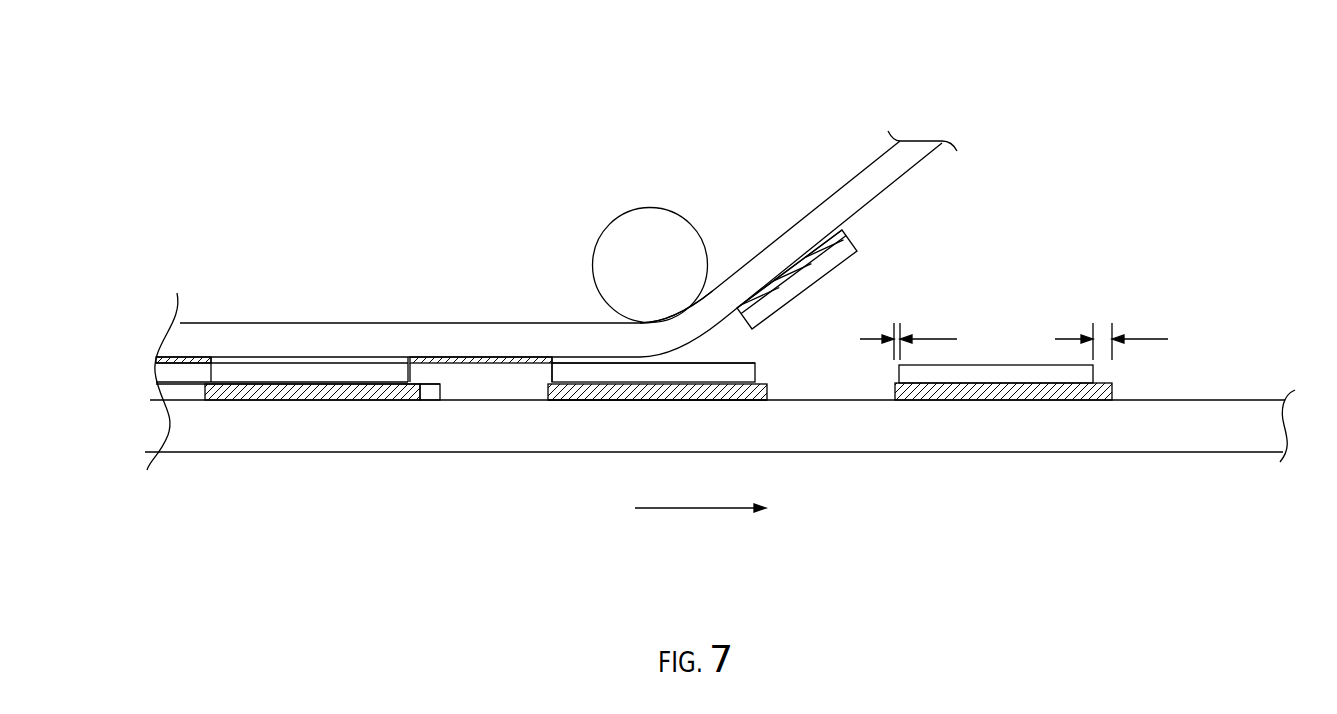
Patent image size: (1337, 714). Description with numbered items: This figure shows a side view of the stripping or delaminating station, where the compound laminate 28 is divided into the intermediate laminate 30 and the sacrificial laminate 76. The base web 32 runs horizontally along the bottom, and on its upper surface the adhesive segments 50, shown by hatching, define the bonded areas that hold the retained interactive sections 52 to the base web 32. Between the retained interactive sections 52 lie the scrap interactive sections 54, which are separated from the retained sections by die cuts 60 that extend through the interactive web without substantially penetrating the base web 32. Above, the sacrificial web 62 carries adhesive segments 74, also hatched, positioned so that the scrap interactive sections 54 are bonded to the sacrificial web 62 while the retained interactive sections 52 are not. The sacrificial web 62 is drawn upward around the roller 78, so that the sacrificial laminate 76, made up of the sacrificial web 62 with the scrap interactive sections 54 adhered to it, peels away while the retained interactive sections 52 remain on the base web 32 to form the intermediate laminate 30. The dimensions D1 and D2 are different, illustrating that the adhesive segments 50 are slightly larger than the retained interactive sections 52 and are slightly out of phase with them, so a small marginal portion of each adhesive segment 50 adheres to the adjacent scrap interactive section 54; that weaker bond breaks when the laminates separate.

The compound laminate 28 is at (256, 519).
The intermediate laminate 30 is at (1138, 493).
The base web 32 is at (1235, 400).
The adhesive segments 50 is at (770, 390).
The retained interactive sections 52 is at (339, 382).
The scrap interactive sections 54 is at (437, 393).
The die cuts 60 is at (410, 372).
The sacrificial web 62 is at (865, 166).
The adhesive segments 74 is at (488, 357).
The sacrificial laminate 76 is at (796, 72).
The roller 78 is at (649, 207).
The dimension D1 is at (895, 323).
The dimension D2 is at (1102, 337).